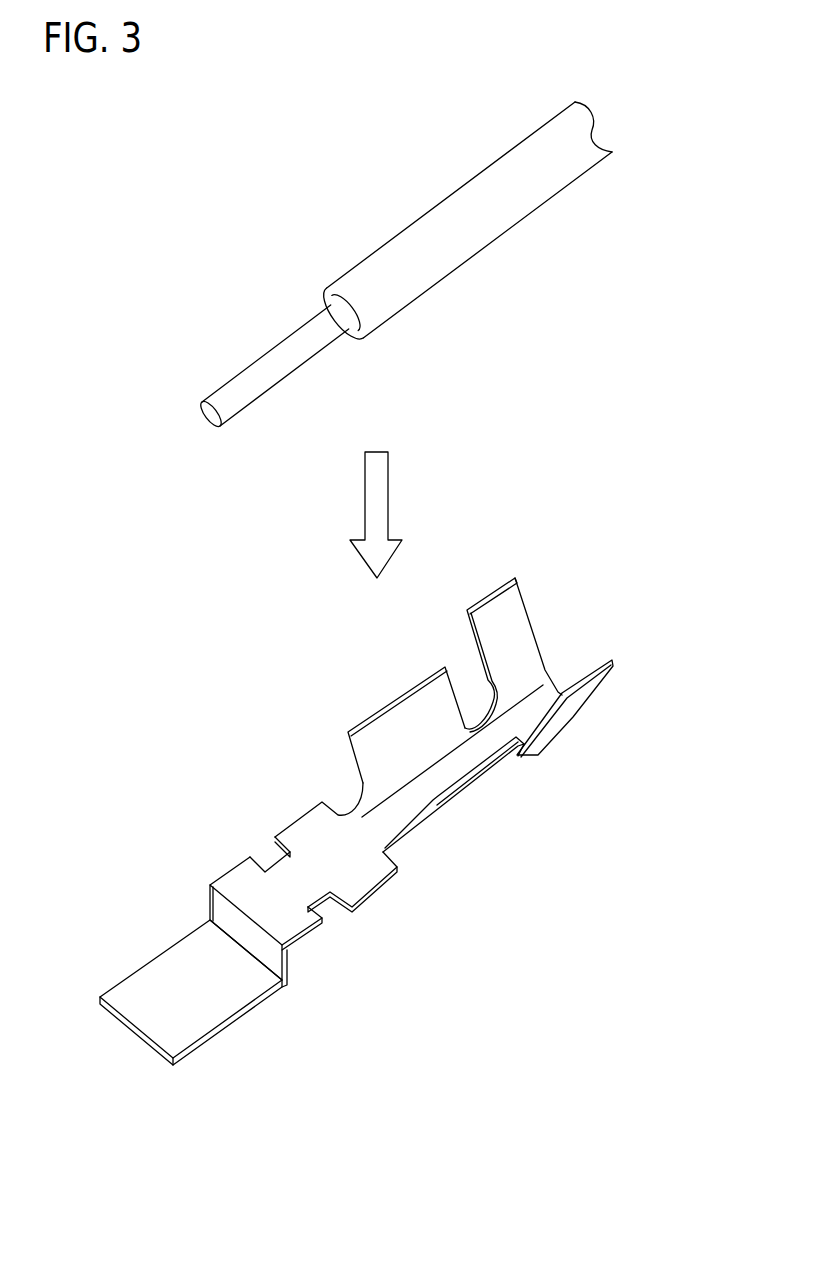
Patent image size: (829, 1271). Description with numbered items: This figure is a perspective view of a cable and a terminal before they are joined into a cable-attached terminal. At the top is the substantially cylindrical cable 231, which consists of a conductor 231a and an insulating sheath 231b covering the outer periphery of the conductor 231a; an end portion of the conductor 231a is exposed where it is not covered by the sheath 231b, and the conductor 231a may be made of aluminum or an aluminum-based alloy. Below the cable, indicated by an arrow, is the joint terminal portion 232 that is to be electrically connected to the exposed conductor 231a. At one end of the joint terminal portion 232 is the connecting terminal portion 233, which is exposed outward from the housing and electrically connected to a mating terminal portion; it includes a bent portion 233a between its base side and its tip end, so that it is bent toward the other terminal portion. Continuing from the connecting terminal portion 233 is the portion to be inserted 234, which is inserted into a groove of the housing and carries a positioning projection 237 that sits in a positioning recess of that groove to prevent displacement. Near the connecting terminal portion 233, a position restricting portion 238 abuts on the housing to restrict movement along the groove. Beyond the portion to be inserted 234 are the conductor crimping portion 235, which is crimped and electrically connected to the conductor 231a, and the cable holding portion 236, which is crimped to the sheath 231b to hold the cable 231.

The cable 231 is at (402, 266).
The conductor 231a is at (272, 353).
The insulating sheath 231b is at (438, 223).
The joint terminal portion 232 is at (393, 828).
The connecting terminal portion 233 is at (178, 973).
The bent portion 233a is at (258, 948).
The portion to be inserted 234 is at (338, 848).
The conductor crimping portion 235 is at (400, 720).
The cable holding portion 236 is at (497, 603).
The positioning projection 237 is at (298, 830).
The position restricting portion 238 is at (243, 878).